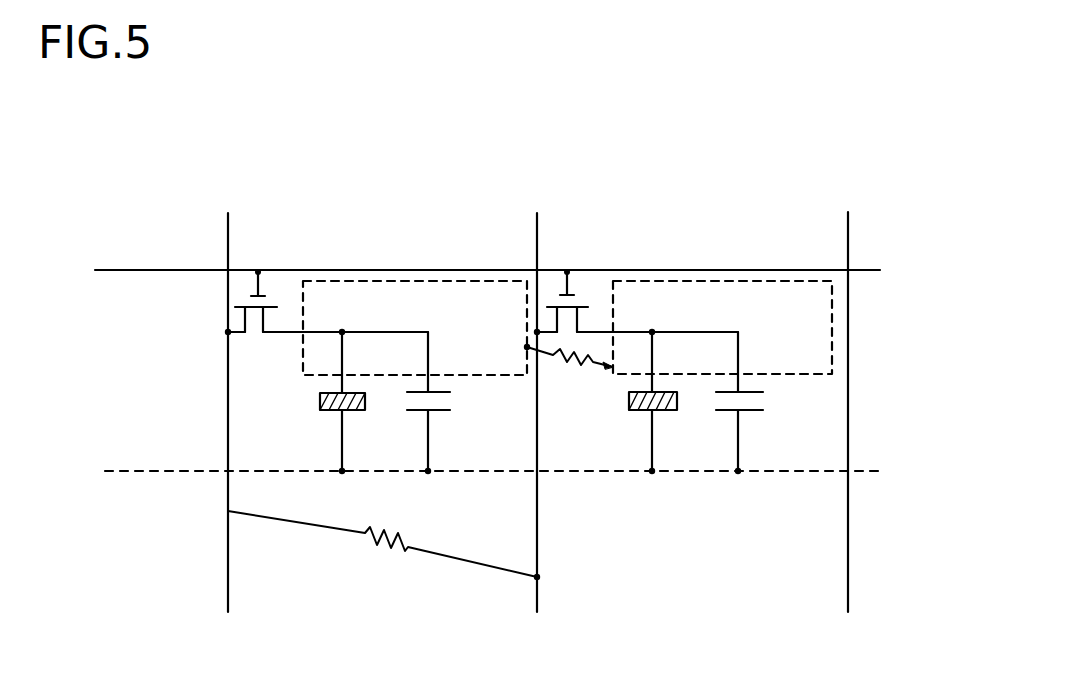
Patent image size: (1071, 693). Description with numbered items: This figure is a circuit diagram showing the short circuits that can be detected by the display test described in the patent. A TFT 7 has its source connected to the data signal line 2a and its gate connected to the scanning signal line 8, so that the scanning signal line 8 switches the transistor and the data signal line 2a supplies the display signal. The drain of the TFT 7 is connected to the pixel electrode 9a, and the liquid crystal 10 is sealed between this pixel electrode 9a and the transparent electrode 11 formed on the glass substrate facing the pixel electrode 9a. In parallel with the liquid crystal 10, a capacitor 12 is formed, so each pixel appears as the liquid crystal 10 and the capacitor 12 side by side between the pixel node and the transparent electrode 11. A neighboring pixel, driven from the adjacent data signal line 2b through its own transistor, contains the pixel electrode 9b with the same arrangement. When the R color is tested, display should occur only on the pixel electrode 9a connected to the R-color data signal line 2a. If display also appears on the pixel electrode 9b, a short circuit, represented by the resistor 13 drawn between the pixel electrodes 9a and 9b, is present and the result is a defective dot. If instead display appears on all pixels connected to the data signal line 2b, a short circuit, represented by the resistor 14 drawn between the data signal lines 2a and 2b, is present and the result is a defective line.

The data signal line 2a is at (230, 393).
The data signal line 2b is at (541, 393).
The TFT 7 is at (276, 296).
The scanning signal line 8 is at (127, 268).
The pixel electrode 9a is at (455, 280).
The pixel electrode 9b is at (785, 280).
The liquid crystal 10 is at (318, 406).
The transparent electrode 11 is at (110, 470).
The capacitor 12 is at (452, 416).
The resistor 13 is at (577, 380).
The resistor 14 is at (392, 562).